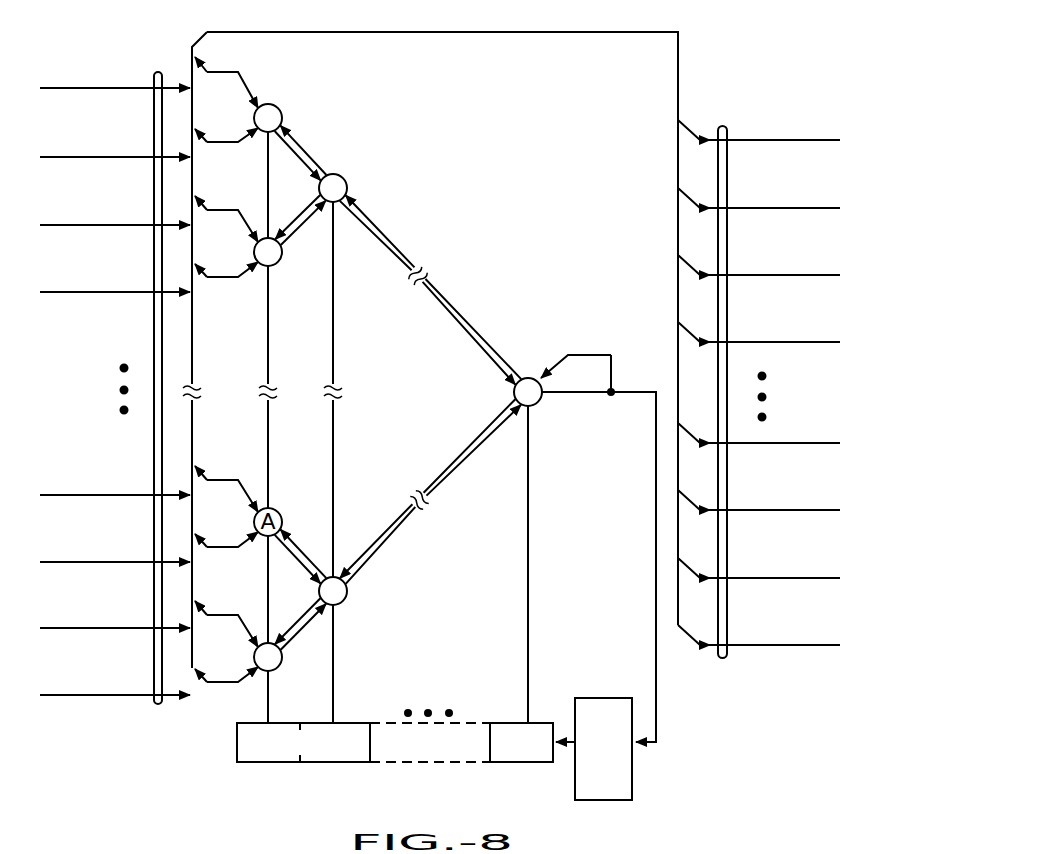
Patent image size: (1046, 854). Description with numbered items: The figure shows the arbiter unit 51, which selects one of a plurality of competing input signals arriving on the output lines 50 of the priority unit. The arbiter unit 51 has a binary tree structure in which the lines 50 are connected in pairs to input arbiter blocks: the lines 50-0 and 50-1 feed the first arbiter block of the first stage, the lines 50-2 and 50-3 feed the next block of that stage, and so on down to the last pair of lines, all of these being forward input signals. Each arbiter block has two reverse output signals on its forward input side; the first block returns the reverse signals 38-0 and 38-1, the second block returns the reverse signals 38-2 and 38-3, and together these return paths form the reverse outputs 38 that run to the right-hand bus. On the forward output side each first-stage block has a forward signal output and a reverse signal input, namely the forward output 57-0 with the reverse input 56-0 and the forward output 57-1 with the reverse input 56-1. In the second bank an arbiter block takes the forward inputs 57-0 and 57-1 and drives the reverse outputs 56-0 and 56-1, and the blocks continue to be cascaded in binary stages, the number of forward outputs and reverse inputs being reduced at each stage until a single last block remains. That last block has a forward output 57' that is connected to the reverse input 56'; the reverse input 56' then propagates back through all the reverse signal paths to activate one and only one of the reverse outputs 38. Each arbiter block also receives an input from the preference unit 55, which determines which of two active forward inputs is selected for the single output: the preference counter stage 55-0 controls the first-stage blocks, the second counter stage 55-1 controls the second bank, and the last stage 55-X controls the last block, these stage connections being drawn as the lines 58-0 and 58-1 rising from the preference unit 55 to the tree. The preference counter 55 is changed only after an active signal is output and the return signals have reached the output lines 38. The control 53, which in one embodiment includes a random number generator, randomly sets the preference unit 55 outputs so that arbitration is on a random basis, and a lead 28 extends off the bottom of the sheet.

The system bus 28 is at (595, 853).
The reverse outputs 38 is at (722, 126).
The reverse signal 38-0 is at (210, 68).
The reverse signal 38-1 is at (221, 140).
The grant line 2 38-2 is at (753, 275).
The grant line 3 38-3 is at (755, 342).
The output lines 50 is at (157, 72).
The input line 50-0 is at (137, 88).
The input line 50-1 is at (137, 157).
The input line 50-2 is at (137, 225).
The input line 50-3 is at (137, 292).
The arbiter unit 51 is at (313, 20).
The control 53 is at (620, 778).
The preference unit 55 is at (233, 750).
The preference counter stage 55-0 is at (276, 762).
The second counter stage 55-1 is at (319, 764).
The last stage of preference counter 55-X is at (521, 764).
The reverse signal input 56-0 is at (300, 140).
The reverse signal input 56-1 is at (293, 220).
The reverse input 56' is at (606, 362).
The forward signal output 57-0 is at (306, 150).
The forward signal output 57-1 is at (288, 234).
The forward output 57' is at (599, 567).
The preference line 0 58-0 is at (270, 698).
The preference line 1 58-1 is at (333, 700).